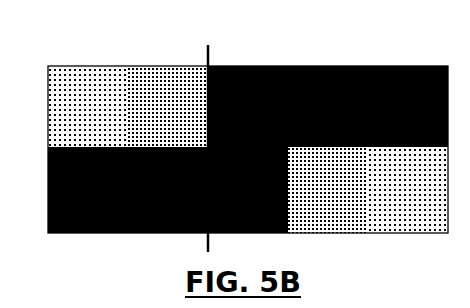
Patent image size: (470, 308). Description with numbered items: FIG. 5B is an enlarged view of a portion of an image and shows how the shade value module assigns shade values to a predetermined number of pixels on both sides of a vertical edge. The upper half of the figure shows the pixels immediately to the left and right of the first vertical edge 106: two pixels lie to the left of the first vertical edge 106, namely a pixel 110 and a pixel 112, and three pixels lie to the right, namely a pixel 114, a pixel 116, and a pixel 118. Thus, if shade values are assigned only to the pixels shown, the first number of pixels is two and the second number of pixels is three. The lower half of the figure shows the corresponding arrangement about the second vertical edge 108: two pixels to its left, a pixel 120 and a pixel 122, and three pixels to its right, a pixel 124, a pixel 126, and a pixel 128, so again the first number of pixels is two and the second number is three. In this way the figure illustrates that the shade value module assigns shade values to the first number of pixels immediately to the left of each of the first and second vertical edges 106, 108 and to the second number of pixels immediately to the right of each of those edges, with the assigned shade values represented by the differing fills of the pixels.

The first vertical edge 106 is at (197, 89).
The second vertical edge 108 is at (210, 182).
The pixel 110 is at (71, 77).
The pixel 112 is at (150, 70).
The pixel 114 is at (239, 59).
The pixel 116 is at (316, 59).
The pixel 118 is at (399, 59).
The pixel 120 is at (78, 225).
The pixel 122 is at (158, 225).
The pixel 124 is at (263, 182).
The pixel 126 is at (334, 202).
The pixel 128 is at (417, 204).